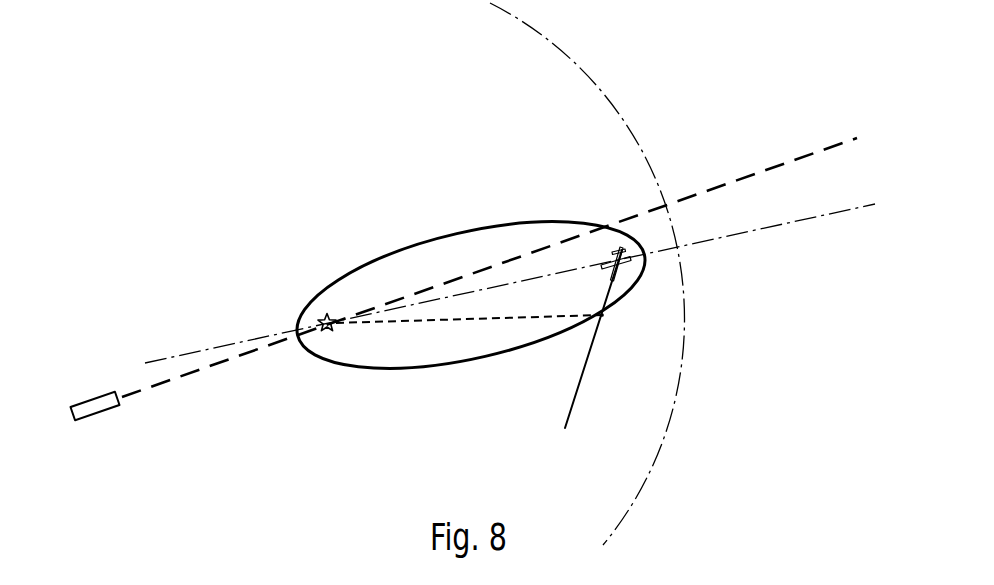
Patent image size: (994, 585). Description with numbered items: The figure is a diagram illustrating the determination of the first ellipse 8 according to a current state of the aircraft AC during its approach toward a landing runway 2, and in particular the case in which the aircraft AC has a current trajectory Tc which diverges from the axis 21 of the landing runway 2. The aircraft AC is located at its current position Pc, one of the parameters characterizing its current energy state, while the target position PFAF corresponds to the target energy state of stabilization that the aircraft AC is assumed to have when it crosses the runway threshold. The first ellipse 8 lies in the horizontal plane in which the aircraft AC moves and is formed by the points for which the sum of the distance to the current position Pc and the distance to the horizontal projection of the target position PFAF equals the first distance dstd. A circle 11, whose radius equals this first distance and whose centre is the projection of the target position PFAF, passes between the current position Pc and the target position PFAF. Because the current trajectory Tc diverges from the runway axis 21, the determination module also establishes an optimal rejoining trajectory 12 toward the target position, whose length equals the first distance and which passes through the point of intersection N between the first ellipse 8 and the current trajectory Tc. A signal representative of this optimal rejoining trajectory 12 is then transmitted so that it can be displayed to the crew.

The landing runway 2 is at (103, 412).
The axis of the landing runway 21 is at (227, 361).
The first ellipse 8 is at (445, 368).
The circle 11 is at (595, 82).
The optimal rejoining trajectory 12 is at (518, 341).
The target position PFAF is at (327, 292).
The current position Pc is at (655, 235).
The aircraft AC is at (634, 275).
The current trajectory Tc is at (585, 378).
The point of intersection N is at (610, 328).